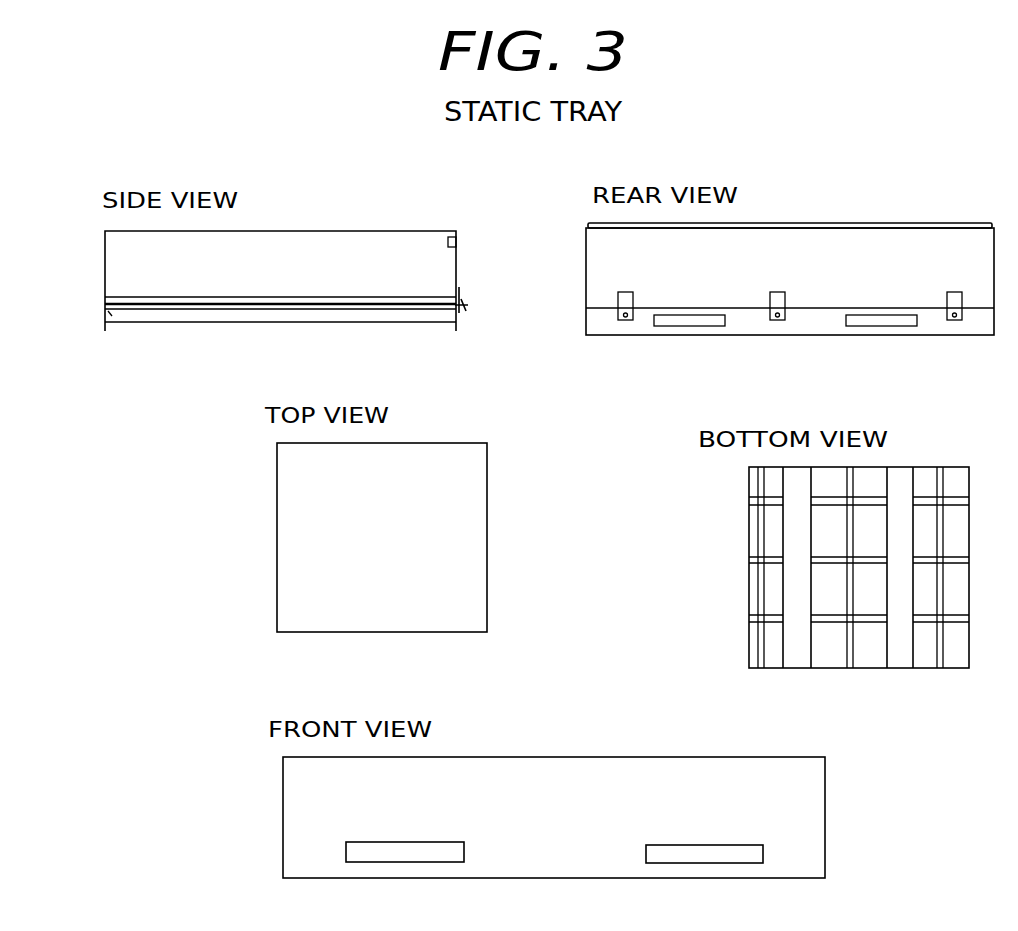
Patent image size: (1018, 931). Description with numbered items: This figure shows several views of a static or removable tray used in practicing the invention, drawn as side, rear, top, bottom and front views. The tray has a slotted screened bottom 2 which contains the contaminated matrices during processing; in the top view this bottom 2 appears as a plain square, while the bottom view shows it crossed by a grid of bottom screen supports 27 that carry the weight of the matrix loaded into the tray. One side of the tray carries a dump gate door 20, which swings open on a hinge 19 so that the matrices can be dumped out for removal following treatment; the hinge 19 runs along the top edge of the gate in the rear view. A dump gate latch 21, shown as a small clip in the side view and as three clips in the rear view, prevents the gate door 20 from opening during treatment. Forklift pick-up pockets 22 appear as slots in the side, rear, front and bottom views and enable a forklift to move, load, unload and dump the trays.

The slotted screened bottom of tray 2 is at (302, 525).
The hinge 19 is at (458, 240).
The dump gate door 20 is at (458, 268).
The dump gate latch 21 is at (462, 297).
The forklift pick-up pocket 22 is at (108, 311).
The bottom screen support 27 is at (755, 531).